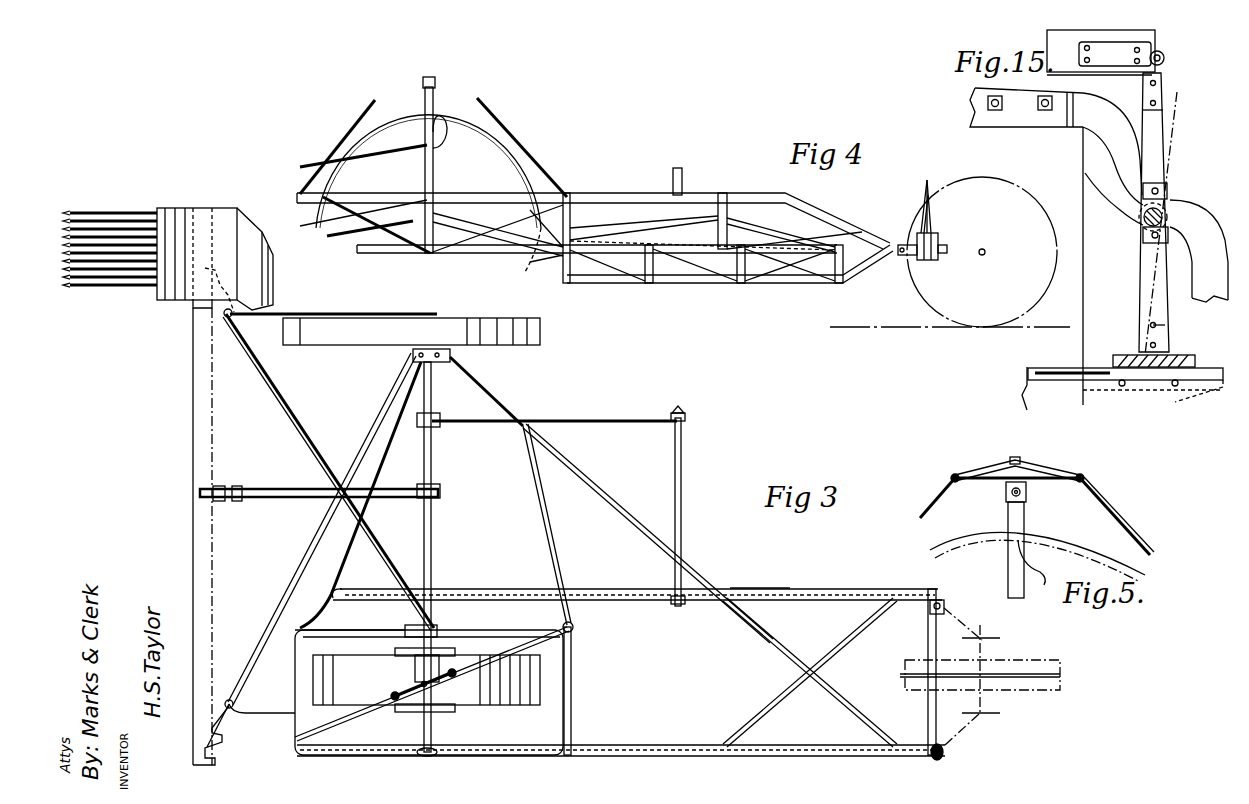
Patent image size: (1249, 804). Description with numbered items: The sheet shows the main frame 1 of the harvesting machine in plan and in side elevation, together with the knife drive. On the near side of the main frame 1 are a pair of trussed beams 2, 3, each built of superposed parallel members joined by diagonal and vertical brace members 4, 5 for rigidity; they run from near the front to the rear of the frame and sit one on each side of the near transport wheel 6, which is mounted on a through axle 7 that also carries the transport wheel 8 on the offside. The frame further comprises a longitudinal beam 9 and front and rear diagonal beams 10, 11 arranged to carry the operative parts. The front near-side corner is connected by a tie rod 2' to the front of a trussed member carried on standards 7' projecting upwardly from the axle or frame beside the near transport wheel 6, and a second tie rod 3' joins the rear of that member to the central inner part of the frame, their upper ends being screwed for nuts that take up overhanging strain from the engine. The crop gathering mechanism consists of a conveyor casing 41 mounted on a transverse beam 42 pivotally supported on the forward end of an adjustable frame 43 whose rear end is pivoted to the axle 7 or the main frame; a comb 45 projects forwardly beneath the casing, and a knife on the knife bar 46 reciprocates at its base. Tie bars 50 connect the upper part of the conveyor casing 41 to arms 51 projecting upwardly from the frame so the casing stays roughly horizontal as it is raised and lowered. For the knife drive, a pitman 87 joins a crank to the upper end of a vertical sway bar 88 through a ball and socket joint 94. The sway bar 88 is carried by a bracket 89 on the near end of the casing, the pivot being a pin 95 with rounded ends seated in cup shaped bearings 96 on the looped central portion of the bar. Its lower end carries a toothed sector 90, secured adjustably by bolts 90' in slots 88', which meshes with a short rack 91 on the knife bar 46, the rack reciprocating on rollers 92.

In FIG. 4, the main frame 1 is at (950, 252).
In FIG. 3, the main frame 1 is at (621, 601).
In FIG. 4, the trussed beam 2 is at (625, 268).
In FIG. 3, the trussed beam 2 is at (621, 677).
In FIG. 4, the tie rod 2' is at (337, 146).
In FIG. 3, the tie rod 2' is at (432, 686).
In FIG. 5, the tie rod 2' is at (939, 496).
In FIG. 4, the trussed beam 3 is at (593, 209).
In FIG. 3, the trussed beam 3 is at (764, 578).
In FIG. 4, the second tie rod 3' is at (522, 147).
In FIG. 5, the second tie rod 3' is at (1115, 514).
In FIG. 4, the diagonal brace members 4 is at (745, 265).
In FIG. 4, the vertical brace members 5 is at (395, 238).
In FIG. 4, the near transport wheel 6 is at (540, 180).
In FIG. 3, the through axle 7 is at (378, 559).
In FIG. 4, the standards 7' is at (442, 165).
In FIG. 5, the standards 7' is at (1037, 550).
In FIG. 3, the transport wheel 8 is at (411, 331).
In FIG. 3, the longitudinal beam 9 is at (558, 501).
In FIG. 3, the front diagonal beam 10 is at (342, 566).
In FIG. 3, the rear diagonal beam 11 is at (614, 494).
In FIG. 3, the conveyor casing 41 is at (262, 273).
In FIG. 3, the transverse beam 42 is at (200, 460).
In FIG. 3, the adjustable frame 43 is at (310, 443).
In FIG. 3, the comb 45 is at (126, 283).
In FIG. 15, the knife bar 46 is at (1056, 368).
In FIG. 4, the tie bars 50 is at (376, 157).
In FIG. 4, the arms 51 is at (432, 157).
In FIG. 3, the arms 51 is at (437, 316).
In FIG. 15, the pitman 87 is at (1112, 38).
In FIG. 15, the sway bar 88 is at (1158, 214).
In FIG. 15, the slots 88' is at (1132, 331).
In FIG. 15, the bracket 89 is at (1100, 167).
In FIG. 15, the toothed sector 90 is at (1162, 352).
In FIG. 15, the bolts 90' is at (1179, 326).
In FIG. 15, the rack 91 is at (1192, 381).
In FIG. 15, the rollers 92 is at (1168, 386).
In FIG. 15, the ball and socket joint 94 is at (1165, 58).
In FIG. 15, the pin 95 is at (1167, 222).
In FIG. 15, the cup shaped bearings 96 is at (1169, 195).